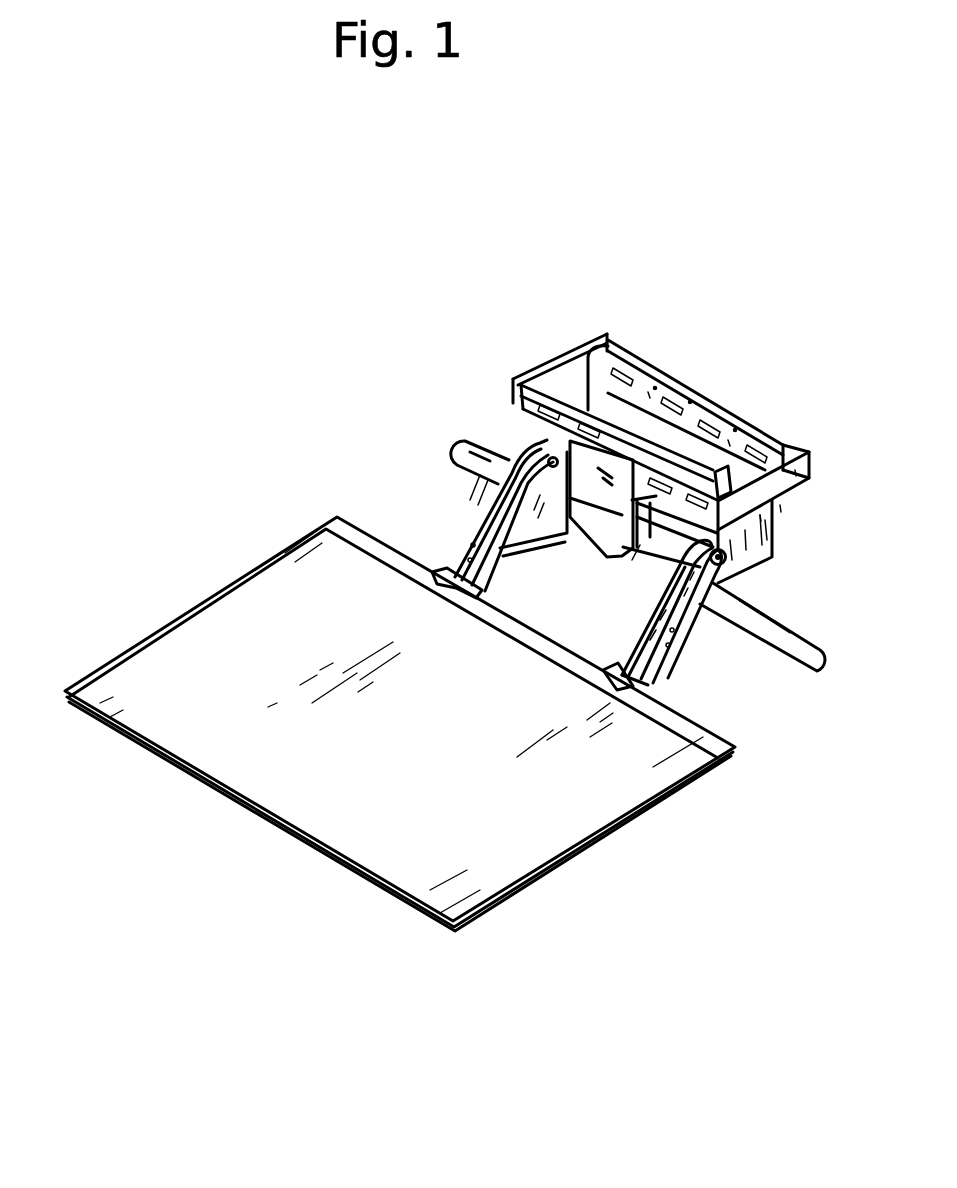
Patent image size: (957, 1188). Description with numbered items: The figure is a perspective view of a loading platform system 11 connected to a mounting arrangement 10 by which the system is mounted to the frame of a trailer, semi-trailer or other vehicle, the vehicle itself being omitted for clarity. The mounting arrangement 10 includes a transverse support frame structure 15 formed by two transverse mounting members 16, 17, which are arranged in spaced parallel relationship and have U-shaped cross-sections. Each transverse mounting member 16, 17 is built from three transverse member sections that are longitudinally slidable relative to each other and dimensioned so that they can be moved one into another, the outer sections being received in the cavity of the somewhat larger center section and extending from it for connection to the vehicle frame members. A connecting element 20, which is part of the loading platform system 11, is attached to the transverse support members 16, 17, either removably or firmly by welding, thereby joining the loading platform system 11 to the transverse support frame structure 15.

The mounting arrangement 10 is at (760, 380).
The loading platform system 11 is at (654, 862).
The transverse support frame structure 15 is at (815, 516).
The transverse mounting member 16 is at (510, 412).
The transverse mounting member 17 is at (637, 364).
The connecting element 20 is at (742, 548).